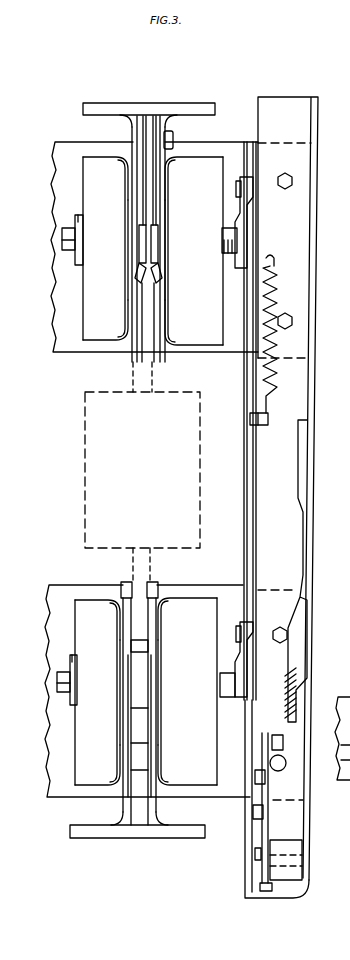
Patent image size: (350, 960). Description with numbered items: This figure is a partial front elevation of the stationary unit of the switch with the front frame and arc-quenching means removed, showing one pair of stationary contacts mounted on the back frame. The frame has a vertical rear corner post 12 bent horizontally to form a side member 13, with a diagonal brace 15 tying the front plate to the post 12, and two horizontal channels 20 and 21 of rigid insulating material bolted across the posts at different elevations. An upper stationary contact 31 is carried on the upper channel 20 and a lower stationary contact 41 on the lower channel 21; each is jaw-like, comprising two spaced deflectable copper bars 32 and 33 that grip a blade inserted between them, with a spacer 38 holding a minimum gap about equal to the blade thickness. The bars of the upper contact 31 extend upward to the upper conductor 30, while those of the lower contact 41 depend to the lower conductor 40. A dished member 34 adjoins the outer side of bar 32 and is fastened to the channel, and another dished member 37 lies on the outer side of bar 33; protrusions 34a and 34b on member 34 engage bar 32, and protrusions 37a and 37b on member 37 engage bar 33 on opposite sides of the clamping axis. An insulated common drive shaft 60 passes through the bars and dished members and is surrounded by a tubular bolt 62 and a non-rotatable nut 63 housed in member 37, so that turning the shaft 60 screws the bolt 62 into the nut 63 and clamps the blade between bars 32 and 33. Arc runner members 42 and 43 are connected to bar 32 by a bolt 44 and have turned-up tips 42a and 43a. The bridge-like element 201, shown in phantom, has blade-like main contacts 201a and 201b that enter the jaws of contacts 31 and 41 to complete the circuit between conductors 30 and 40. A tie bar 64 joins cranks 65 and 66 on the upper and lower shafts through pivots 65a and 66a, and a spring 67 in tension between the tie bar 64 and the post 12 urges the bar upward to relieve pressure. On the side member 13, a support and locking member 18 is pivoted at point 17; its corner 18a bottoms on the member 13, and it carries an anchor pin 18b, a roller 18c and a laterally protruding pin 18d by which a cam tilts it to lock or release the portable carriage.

The rear corner post 12 is at (289, 102).
The side member 13 is at (300, 894).
The diagonal brace 15 is at (302, 638).
The pivot point 17 is at (255, 853).
The support and locking member 18 is at (266, 826).
The corner 18a is at (264, 892).
The anchor pin 18b is at (277, 735).
The roller 18c is at (254, 810).
The laterally-protruding pin 18d is at (256, 774).
The upper horizontal channel 20 is at (60, 152).
The lower horizontal channel 21 is at (58, 610).
The upper conductor 30 is at (132, 103).
The upper stationary contact 31 is at (205, 301).
The contact bar 32 is at (163, 362).
The companion contact bar 33 is at (136, 295).
The dished member 34 is at (212, 348).
The protrusion 34a is at (170, 184).
The protrusion 34b is at (168, 318).
The dished member 37 is at (85, 303).
The protrusion 37a is at (128, 186).
The protrusion 37b is at (128, 318).
The spacer 38 is at (141, 742).
The lower conductor 40 is at (128, 838).
The lower stationary contact 41 is at (203, 671).
The arc runner member 42 is at (160, 279).
The arc runner tip 42a is at (158, 235).
The arc runner member 43 is at (136, 279).
The arc runner tip 43a is at (139, 235).
The bolt 44 is at (174, 139).
The drive shaft 60 is at (62, 236).
The tubular bolt 62 is at (135, 675).
The nut 63 is at (79, 222).
The tie bar 64 is at (243, 469).
The crank 65 is at (246, 205).
The pivot attachment 65a is at (254, 184).
The crank 66 is at (246, 660).
The pivot attachment 66a is at (250, 634).
The spring 67 is at (272, 386).
The bridge-like electroconductive element 201 is at (85, 468).
The blade-like main contact 201a is at (133, 381).
The blade-like main contact 201b is at (150, 568).